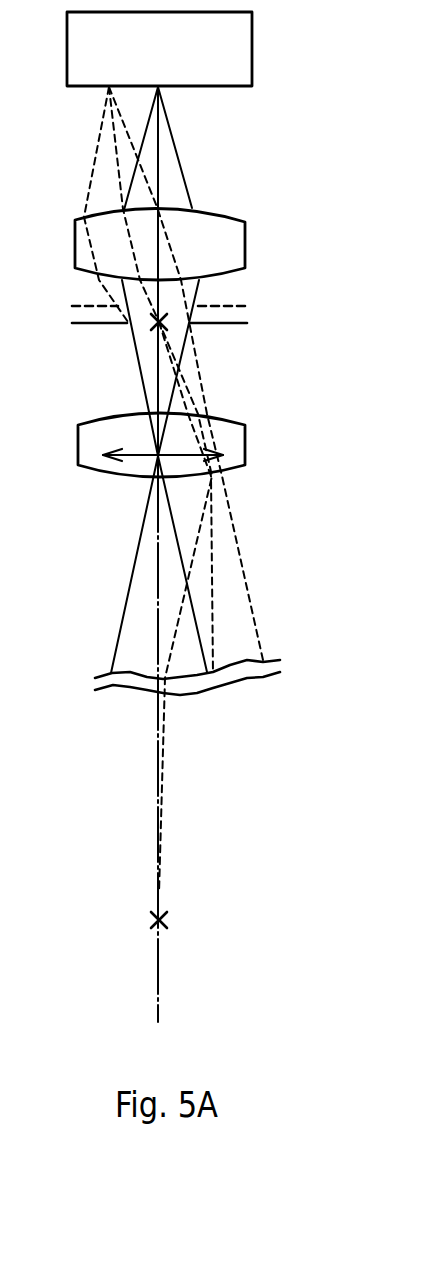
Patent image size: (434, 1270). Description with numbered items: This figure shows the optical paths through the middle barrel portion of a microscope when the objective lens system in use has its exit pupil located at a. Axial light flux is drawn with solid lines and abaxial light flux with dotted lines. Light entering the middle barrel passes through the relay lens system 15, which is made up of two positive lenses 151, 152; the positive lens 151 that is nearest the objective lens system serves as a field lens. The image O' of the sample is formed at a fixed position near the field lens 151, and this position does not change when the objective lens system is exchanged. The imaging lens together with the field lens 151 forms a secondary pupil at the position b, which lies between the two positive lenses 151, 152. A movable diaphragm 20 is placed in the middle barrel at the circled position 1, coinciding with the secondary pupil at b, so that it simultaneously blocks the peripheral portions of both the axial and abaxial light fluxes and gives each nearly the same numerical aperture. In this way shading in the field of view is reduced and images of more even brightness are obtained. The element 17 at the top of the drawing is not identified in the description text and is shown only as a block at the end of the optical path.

The light source / photodetector unit 17 is at (253, 52).
The positive lens 152 is at (242, 243).
The diaphragm 20 is at (228, 323).
The secondary pupil position b is at (155, 325).
The diaphragm position 1 is at (47, 325).
The positive lens 151 is at (238, 448).
The image of the sample O' is at (111, 497).
The relay lens system 15 is at (357, 210).
The exit pupil position a is at (168, 919).